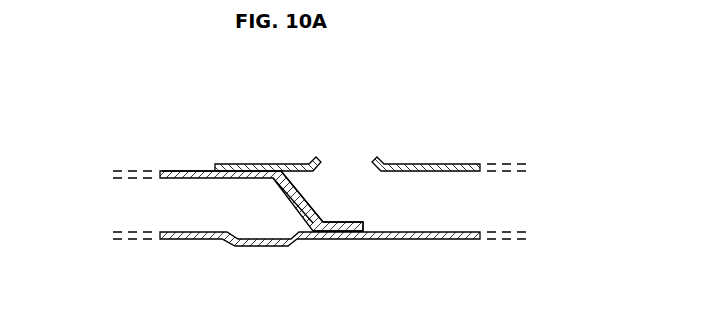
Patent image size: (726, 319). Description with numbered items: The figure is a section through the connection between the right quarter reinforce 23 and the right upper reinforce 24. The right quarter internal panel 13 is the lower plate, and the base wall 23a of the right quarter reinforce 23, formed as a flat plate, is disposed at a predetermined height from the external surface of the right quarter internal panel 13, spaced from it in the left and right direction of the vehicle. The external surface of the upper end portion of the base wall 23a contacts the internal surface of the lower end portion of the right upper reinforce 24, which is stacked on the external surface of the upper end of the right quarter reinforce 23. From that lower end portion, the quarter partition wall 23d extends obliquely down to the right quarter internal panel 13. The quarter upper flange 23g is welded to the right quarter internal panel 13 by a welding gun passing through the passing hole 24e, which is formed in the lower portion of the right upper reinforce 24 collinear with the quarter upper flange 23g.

The right quarter internal panel 13 is at (200, 240).
The right quarter reinforce 23 is at (184, 150).
The base wall 23a is at (199, 169).
The quarter partition wall 23d is at (289, 192).
The quarter upper flange 23g is at (350, 228).
The right upper reinforce 24 is at (267, 146).
The passing hole 24e is at (349, 167).